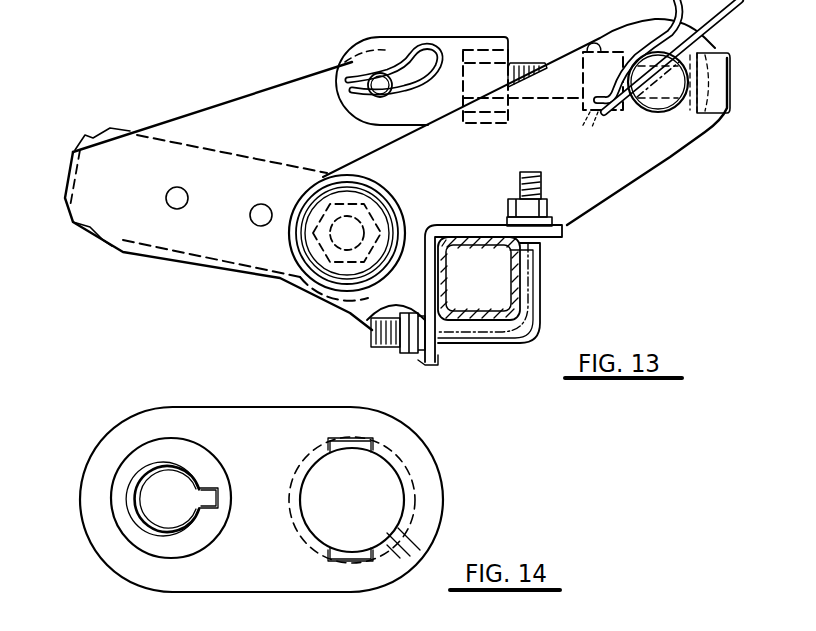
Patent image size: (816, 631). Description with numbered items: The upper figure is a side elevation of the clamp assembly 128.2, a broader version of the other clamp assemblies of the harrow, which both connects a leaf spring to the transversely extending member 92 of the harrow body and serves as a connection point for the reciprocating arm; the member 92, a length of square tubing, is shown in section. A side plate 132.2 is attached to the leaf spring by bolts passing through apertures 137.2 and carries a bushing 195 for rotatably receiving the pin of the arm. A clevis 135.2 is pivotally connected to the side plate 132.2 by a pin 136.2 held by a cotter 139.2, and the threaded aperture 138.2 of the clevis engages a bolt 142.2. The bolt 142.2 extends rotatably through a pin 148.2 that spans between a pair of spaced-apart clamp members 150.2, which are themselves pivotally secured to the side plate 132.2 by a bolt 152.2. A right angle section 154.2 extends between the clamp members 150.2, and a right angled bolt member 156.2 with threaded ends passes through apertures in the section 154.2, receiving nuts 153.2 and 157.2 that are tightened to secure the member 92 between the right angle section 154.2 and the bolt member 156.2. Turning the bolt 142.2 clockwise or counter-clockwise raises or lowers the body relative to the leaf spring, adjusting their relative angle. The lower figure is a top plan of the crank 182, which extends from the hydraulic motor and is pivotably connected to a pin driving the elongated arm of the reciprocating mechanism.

In FIG. 13, the clamp assembly 128.2 is at (652, 268).
In FIG. 13, the side plate 132.2 is at (212, 123).
In FIG. 13, the clevis 135.2 is at (372, 47).
In FIG. 13, the pin 136.2 is at (370, 92).
In FIG. 13, the apertures 137.2 is at (252, 218).
In FIG. 13, the threaded aperture 138.2 is at (487, 63).
In FIG. 13, the cotter 139.2 is at (427, 50).
In FIG. 13, the bolt 142.2 is at (522, 62).
In FIG. 13, the pin 148.2 is at (662, 87).
In FIG. 13, the clamp member 150.2 is at (597, 178).
In FIG. 13, the bolt 152.2 is at (350, 238).
In FIG. 13, the nut 153.2 is at (548, 206).
In FIG. 13, the right angle section 154.2 is at (493, 182).
In FIG. 13, the right angled bolt member 156.2 is at (541, 302).
In FIG. 13, the nut 157.2 is at (372, 327).
In FIG. 13, the transversely extending member 92 is at (469, 248).
In FIG. 13, the bushing 195 is at (92, 135).
In FIG. 14, the crank 182 is at (248, 418).